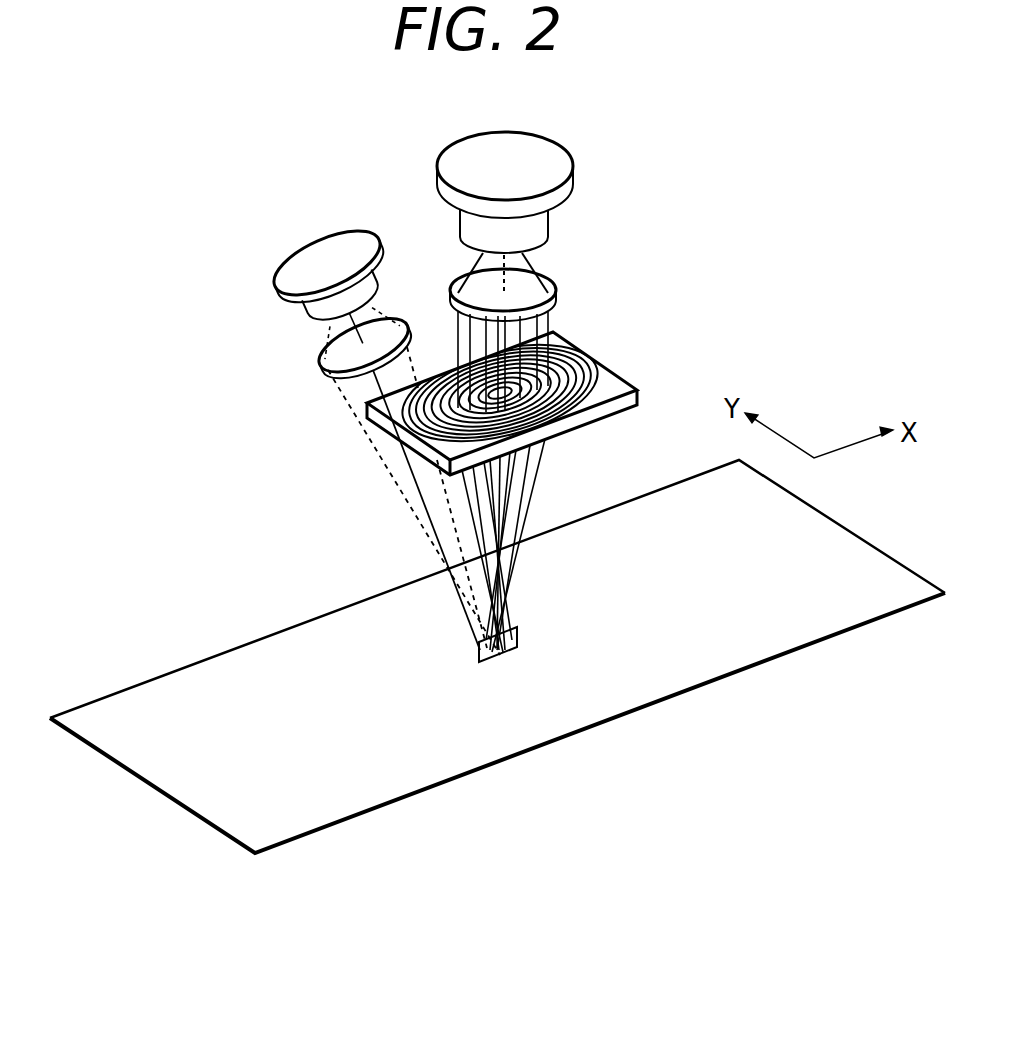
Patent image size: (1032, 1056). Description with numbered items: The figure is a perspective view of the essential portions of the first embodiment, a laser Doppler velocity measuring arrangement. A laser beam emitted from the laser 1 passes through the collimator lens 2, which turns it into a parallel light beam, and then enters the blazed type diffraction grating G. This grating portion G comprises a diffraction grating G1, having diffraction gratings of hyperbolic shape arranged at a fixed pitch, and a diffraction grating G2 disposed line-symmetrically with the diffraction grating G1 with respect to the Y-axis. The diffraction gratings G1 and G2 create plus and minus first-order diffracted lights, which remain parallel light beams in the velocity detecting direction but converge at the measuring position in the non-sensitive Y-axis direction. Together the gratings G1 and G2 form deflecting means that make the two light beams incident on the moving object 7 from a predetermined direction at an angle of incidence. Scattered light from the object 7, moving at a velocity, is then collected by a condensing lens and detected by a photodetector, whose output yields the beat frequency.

The laser 1 is at (565, 190).
The collimator lens 2 is at (548, 285).
The moving object 7 is at (728, 657).
The blazed type diffraction grating G is at (499, 382).
The diffraction grating G1 is at (373, 420).
The diffraction grating G2 is at (582, 360).